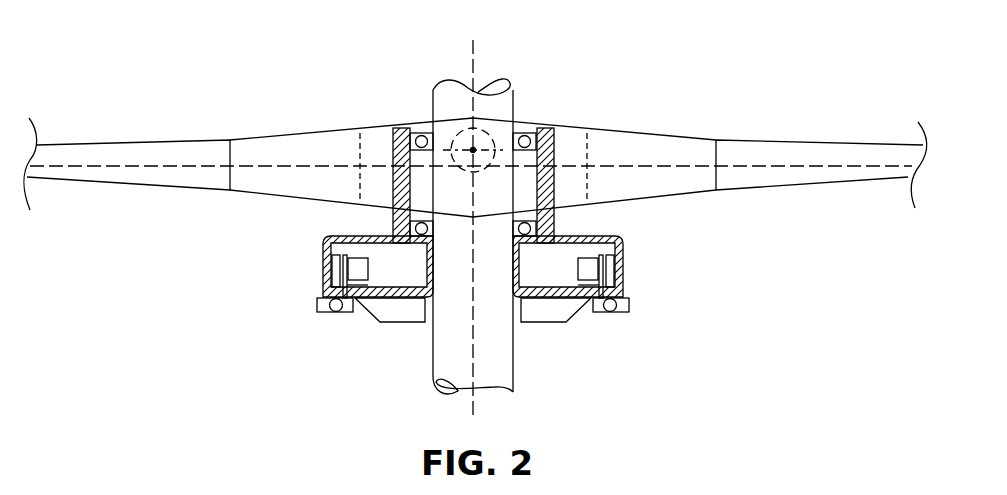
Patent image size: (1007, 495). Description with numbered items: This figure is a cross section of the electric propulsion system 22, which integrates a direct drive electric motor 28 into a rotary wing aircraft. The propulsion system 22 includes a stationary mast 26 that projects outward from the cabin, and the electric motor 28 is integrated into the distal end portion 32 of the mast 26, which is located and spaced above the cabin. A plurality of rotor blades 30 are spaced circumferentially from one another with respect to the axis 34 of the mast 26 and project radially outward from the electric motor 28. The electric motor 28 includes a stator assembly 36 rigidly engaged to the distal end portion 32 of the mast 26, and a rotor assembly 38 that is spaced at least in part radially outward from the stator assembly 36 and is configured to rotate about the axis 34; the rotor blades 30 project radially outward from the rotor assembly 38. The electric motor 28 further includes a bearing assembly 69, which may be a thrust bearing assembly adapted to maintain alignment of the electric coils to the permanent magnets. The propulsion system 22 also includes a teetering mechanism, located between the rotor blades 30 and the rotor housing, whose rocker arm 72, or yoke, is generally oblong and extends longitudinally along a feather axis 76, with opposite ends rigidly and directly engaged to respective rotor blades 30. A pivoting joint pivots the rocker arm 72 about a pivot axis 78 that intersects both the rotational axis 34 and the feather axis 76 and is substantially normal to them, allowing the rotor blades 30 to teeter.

The electric propulsion system 22 is at (637, 52).
The mast 26 is at (433, 92).
The electric motor 28 is at (600, 365).
The rotor blades 30 is at (118, 142).
The distal end portion 32 is at (433, 352).
The axis 34 is at (478, 63).
The stator assembly 36 is at (535, 323).
The rotor assembly 38 is at (627, 258).
The bearing assembly 69 is at (322, 313).
The rocker arm 72 is at (290, 133).
The feather axis 76 is at (180, 167).
The pivot axis 78 is at (473, 150).